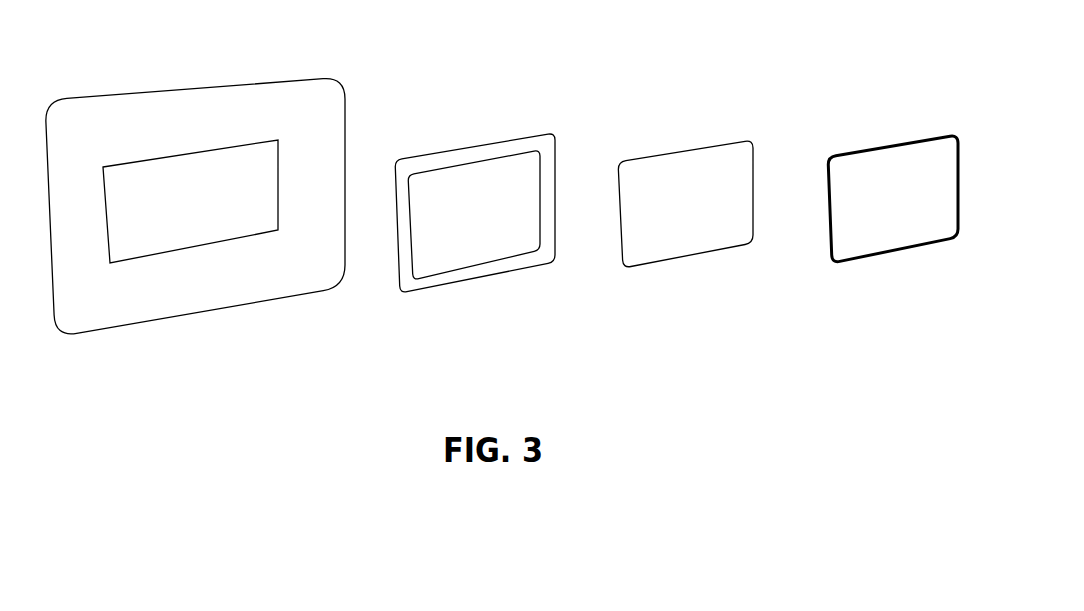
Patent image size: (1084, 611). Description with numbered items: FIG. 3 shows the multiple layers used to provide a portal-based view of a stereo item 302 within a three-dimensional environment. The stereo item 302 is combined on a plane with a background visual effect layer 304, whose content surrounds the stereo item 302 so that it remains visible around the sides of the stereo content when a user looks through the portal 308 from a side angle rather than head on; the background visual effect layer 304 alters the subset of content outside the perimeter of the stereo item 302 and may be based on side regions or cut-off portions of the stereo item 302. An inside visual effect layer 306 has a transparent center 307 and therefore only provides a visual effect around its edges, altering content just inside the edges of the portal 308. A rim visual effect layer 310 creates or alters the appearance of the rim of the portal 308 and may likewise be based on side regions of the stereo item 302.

The stereo item 302 is at (210, 150).
The background visual effect layer 304 is at (137, 97).
The inside visual effect layer 306 is at (468, 148).
The transparent center 307 is at (467, 263).
The portal 308 is at (667, 163).
The rim visual effect layer 310 is at (882, 143).